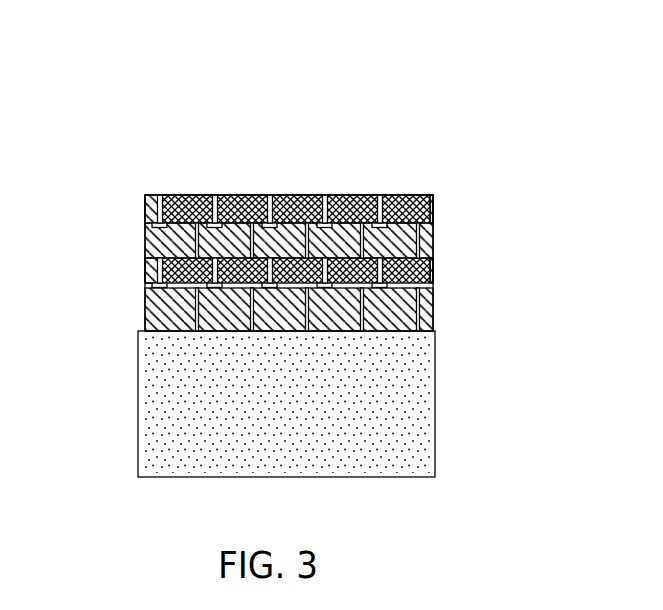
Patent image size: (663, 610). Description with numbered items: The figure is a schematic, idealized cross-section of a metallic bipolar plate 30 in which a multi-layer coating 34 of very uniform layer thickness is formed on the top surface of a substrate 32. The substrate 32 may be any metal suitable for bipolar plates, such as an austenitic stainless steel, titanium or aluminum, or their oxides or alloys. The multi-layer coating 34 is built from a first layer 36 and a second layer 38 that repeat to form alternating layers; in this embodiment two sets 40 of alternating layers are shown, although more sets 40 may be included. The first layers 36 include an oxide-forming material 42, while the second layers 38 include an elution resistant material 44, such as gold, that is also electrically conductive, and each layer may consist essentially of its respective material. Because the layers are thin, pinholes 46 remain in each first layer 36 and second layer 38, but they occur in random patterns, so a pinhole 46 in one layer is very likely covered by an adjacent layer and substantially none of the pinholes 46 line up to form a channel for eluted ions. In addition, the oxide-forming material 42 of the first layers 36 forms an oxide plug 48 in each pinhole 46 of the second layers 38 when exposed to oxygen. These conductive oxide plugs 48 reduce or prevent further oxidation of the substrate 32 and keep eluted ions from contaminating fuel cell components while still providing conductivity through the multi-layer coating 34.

The metallic bipolar plate 30 is at (308, 292).
The substrate 32 is at (430, 398).
The multi-layer coating 34 is at (267, 286).
The first layer 36 is at (433, 240).
The second layer 38 is at (433, 198).
The set of alternating layers 40 is at (292, 286).
The oxide-forming material 42 is at (431, 253).
The elution resistant material 44 is at (433, 207).
The pinhole 46 is at (272, 195).
The oxide plug 48 is at (313, 195).